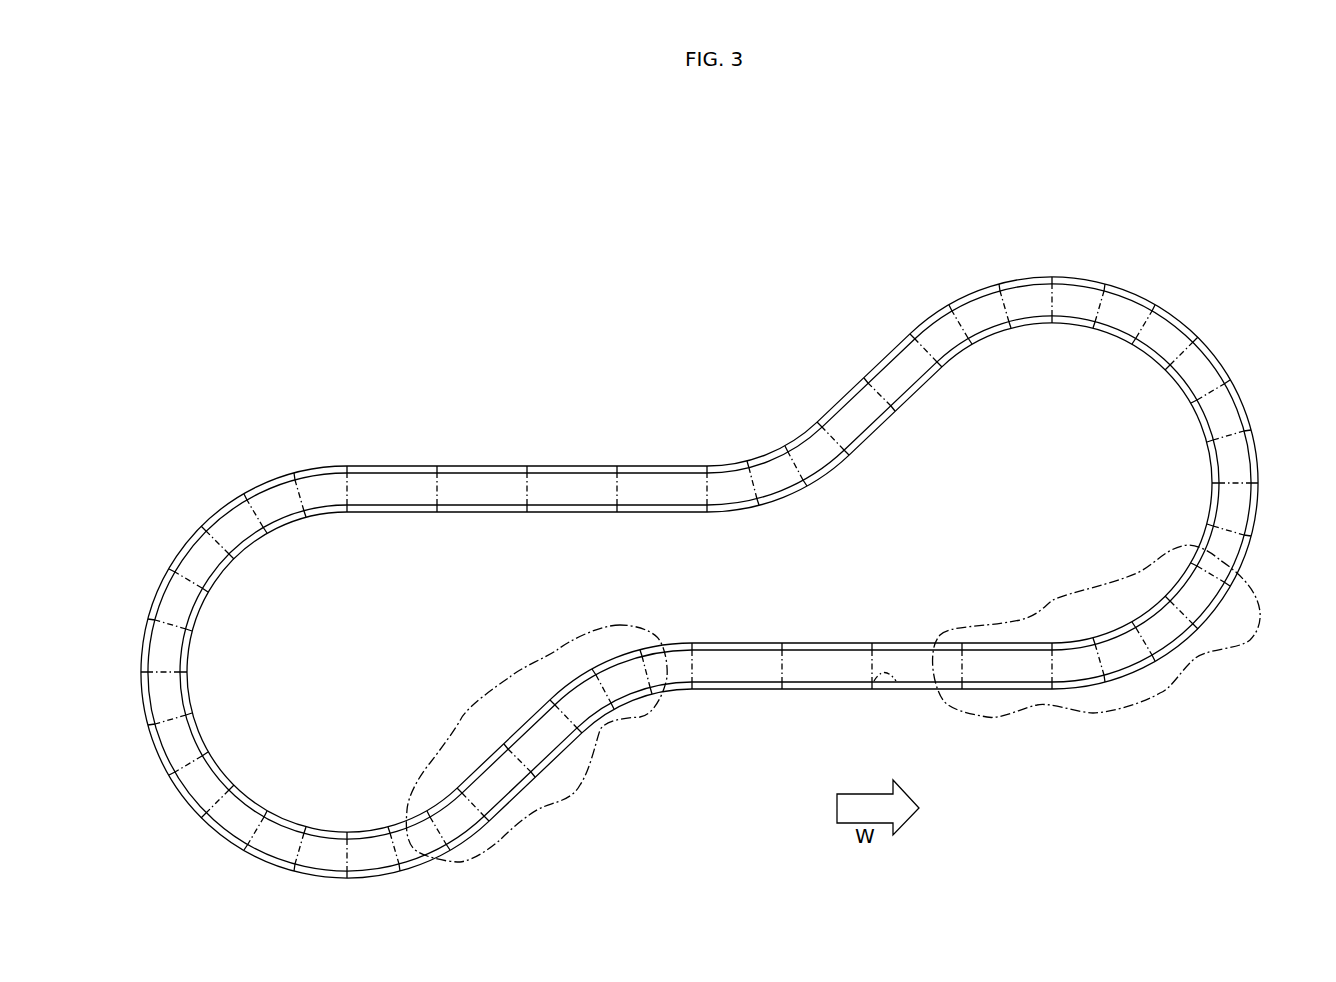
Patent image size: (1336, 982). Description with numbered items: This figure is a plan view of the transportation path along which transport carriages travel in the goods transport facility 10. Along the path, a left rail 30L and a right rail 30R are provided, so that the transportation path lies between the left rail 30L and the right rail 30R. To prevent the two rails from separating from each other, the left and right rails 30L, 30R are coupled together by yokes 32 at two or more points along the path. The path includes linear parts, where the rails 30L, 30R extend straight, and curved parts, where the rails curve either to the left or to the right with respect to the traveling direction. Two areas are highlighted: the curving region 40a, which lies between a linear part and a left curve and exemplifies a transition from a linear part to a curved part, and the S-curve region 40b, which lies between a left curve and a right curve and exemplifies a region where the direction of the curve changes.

The goods transport facility 10 is at (699, 537).
The left rail 30L is at (743, 643).
The right rail 30R is at (755, 690).
The yoke 32 is at (895, 689).
The curving region 40a is at (1025, 612).
The S-curve region 40b is at (563, 800).